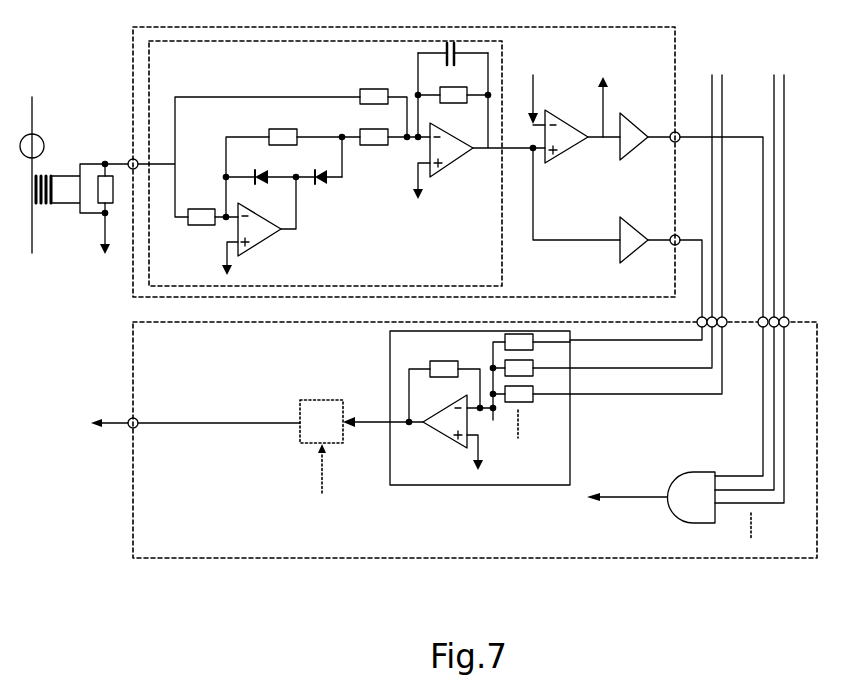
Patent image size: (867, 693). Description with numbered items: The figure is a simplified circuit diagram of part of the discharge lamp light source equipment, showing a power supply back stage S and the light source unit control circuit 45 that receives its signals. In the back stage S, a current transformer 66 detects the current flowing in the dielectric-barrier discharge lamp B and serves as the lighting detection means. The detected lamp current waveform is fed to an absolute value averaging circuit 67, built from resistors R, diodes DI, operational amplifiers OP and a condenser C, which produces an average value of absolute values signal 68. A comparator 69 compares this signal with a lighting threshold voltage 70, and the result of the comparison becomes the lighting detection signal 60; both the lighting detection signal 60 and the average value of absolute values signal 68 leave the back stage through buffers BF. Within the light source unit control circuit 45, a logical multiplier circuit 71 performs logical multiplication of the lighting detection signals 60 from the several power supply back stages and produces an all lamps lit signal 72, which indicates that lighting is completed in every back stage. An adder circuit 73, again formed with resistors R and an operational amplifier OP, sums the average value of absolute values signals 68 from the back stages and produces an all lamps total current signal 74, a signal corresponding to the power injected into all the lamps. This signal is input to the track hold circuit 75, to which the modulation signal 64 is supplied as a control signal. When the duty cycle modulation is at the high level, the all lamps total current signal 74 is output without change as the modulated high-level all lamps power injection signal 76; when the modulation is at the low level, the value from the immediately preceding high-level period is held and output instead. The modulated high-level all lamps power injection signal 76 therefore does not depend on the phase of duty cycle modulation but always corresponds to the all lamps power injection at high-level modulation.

The power supply back stage S is at (133, 57).
The dielectric-barrier discharge lamp B is at (39, 141).
The current transformer 66 is at (70, 200).
The resistor R is at (324, 241).
The diode DI is at (282, 178).
The operational amplifier OP is at (357, 298).
The condenser C is at (453, 63).
The absolute value averaging circuit 67 is at (502, 267).
The comparator 69 is at (582, 126).
The lighting threshold voltage 70 is at (533, 86).
The lighting detection signal 60 is at (740, 475).
The buffer BF is at (650, 199).
The average value of absolute values signal 68 is at (533, 200).
The light source unit control circuit 45 is at (133, 353).
The adder circuit 73 is at (438, 485).
The all lamps total current signal 74 is at (374, 417).
The track hold circuit 75 is at (335, 435).
The modulation signal 64 is at (321, 484).
The modulated high-level all lamps power injection signal 76 is at (195, 411).
The logical multiplier circuit 71 is at (705, 509).
The all lamps lit signal 72 is at (627, 486).